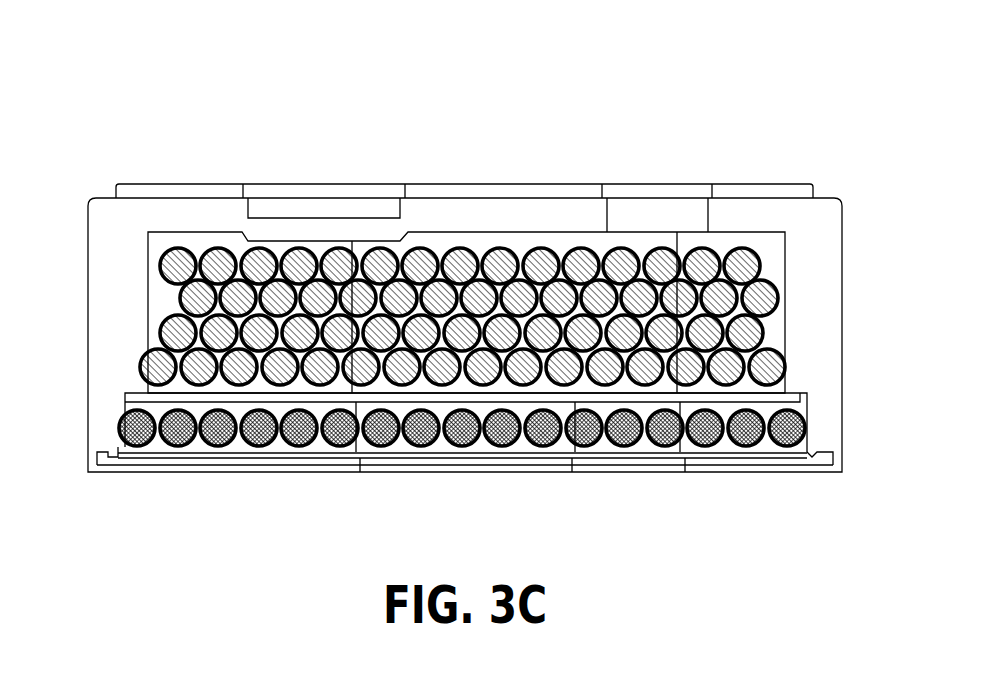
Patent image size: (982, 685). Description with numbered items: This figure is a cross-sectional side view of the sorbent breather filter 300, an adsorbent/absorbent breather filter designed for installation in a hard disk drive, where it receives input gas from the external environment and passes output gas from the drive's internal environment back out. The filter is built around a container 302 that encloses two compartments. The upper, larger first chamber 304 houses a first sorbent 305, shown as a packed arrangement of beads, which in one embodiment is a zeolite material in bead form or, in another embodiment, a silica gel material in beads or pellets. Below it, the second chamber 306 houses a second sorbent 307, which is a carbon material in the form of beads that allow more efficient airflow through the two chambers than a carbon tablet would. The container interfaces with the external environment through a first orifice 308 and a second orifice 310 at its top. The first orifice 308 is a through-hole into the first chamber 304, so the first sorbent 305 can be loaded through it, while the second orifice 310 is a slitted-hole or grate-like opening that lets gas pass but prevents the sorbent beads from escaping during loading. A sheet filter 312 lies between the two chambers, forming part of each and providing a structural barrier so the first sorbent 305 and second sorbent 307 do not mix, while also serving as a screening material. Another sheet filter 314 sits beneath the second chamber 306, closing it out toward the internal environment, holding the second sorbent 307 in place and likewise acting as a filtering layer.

The sorbent breather filter 300 is at (210, 60).
The container 302 is at (88, 287).
The first chamber 304 is at (157, 305).
The first sorbent 305 is at (777, 288).
The second chamber 306 is at (202, 445).
The second sorbent 307 is at (807, 420).
The first orifice 308 is at (658, 215).
The second orifice 310 is at (330, 205).
The sheet filter 312 is at (793, 398).
The sheet filter 314 is at (790, 455).